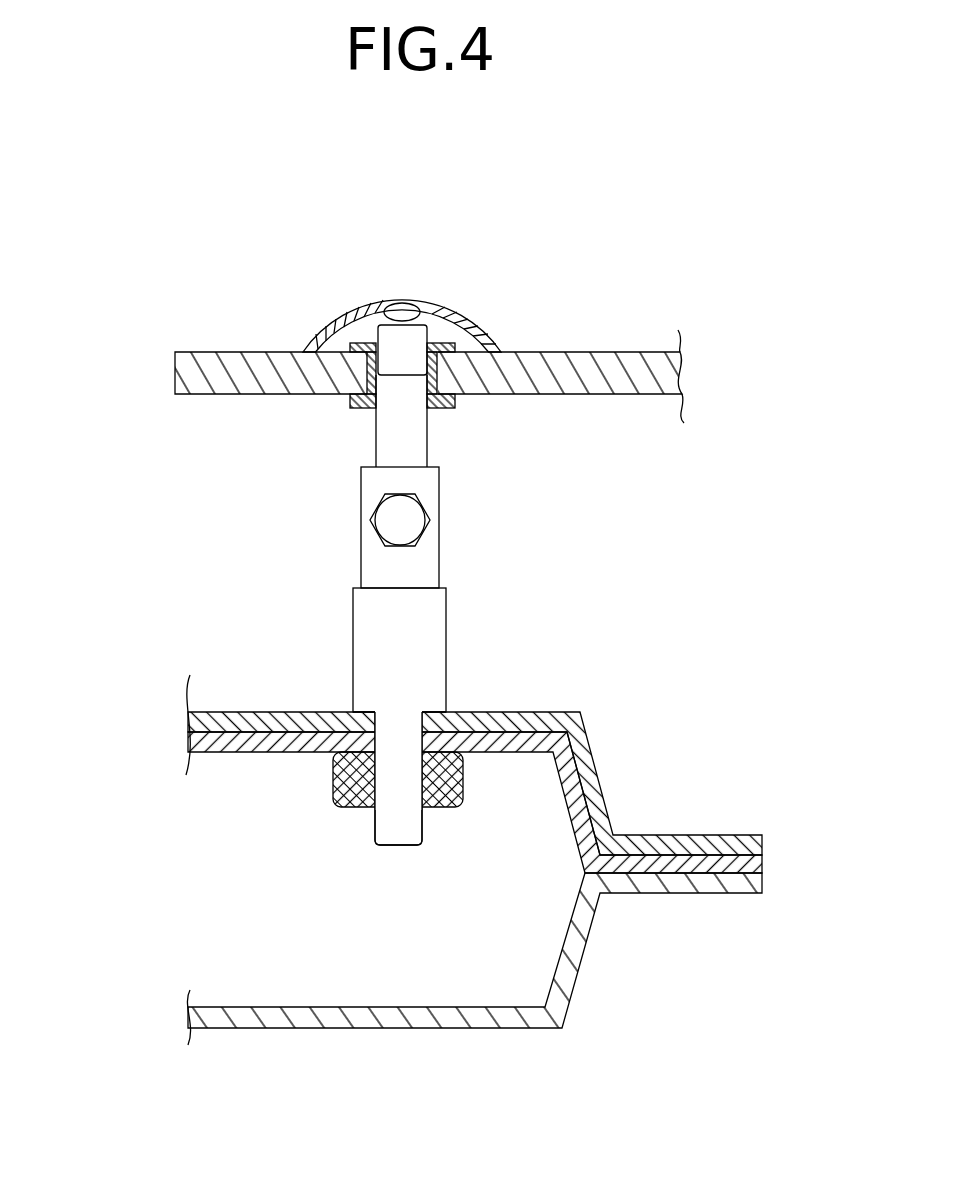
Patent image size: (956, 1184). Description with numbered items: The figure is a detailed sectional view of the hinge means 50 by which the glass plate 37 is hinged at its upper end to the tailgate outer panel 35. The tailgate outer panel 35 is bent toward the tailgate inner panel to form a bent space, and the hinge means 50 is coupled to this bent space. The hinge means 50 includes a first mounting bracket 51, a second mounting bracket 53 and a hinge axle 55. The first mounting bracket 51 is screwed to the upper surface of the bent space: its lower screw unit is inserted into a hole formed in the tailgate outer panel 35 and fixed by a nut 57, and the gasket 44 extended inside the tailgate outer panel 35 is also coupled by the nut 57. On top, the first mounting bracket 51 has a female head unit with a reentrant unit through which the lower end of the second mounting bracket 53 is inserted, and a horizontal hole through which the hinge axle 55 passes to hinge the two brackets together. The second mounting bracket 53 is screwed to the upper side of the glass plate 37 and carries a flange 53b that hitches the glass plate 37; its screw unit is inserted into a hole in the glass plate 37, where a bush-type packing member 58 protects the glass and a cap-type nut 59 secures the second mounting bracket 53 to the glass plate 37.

The hinge means 50 is at (145, 298).
The bush-type packing member 58 is at (362, 345).
The cap-type nut 59 is at (460, 313).
The glass plate 37 is at (595, 357).
The second mounting bracket 53 is at (370, 435).
The flange 53b is at (453, 403).
The hinge axle 55 is at (405, 522).
The first mounting bracket 51 is at (343, 635).
The tailgate outer panel 35 is at (517, 723).
The gasket 44 is at (250, 752).
The nut 57 is at (358, 808).